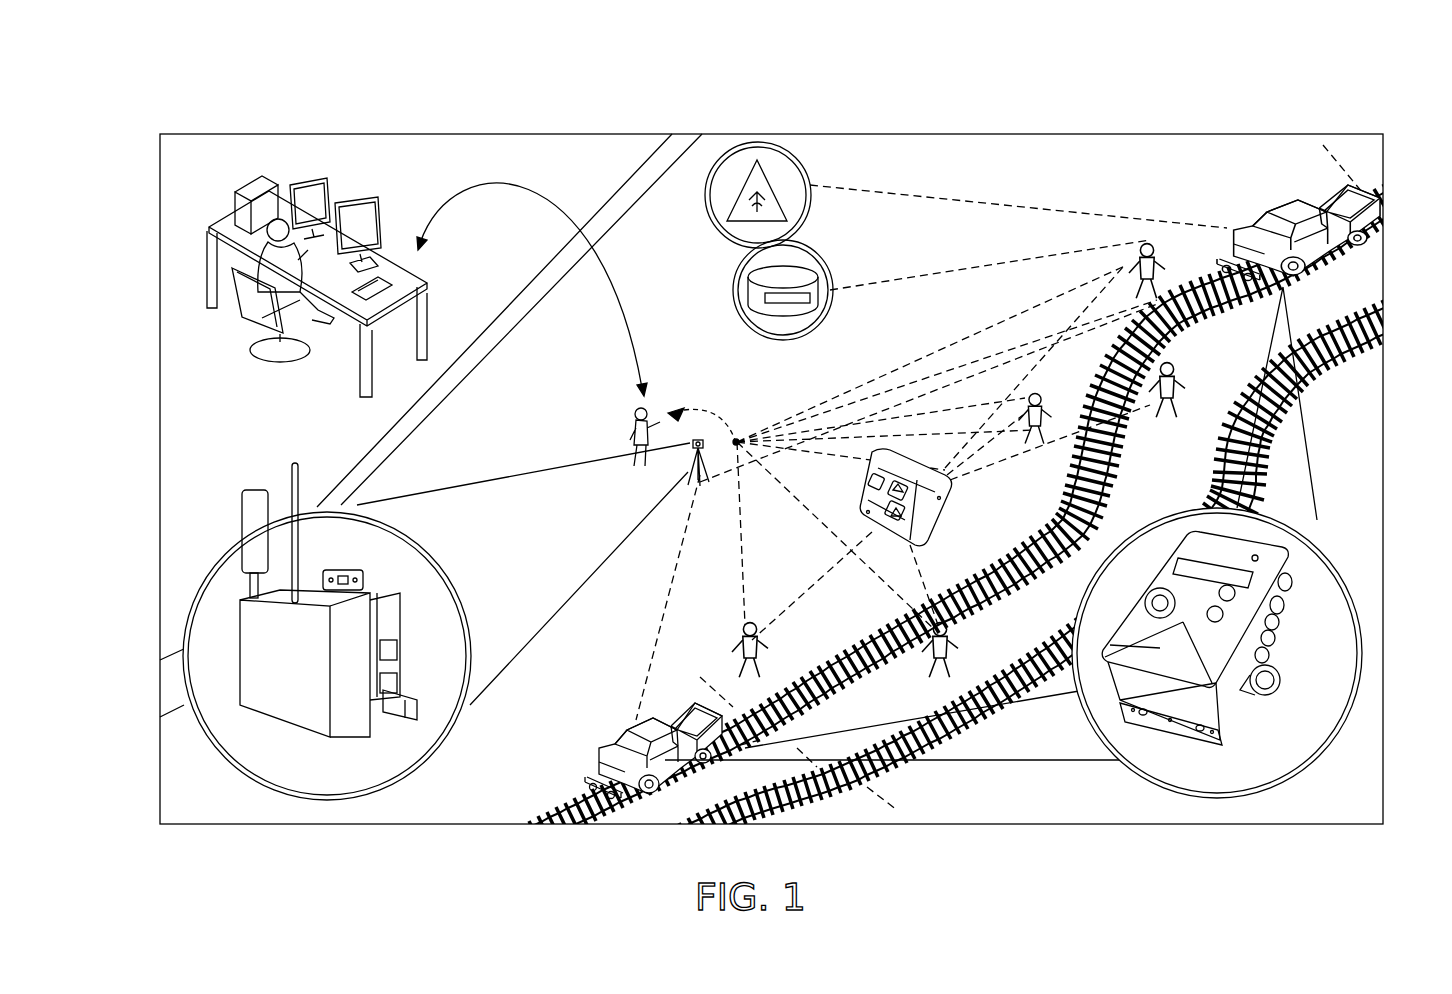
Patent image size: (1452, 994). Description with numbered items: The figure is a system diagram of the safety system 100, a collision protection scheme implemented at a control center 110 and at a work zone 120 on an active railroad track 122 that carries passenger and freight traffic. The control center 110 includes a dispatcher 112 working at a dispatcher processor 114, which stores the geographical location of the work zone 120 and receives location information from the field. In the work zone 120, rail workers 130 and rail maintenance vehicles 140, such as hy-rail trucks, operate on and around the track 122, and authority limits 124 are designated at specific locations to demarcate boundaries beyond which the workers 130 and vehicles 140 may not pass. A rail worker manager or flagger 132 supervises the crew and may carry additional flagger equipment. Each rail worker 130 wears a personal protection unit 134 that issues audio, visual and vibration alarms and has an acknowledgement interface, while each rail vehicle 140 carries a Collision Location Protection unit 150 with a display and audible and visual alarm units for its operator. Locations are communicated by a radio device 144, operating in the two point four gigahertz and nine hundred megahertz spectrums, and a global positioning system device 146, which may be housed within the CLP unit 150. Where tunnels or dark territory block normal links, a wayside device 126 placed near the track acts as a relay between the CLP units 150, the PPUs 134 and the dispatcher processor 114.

The safety system 100 is at (124, 104).
The control center 110 is at (350, 152).
The dispatcher 112 is at (228, 233).
The dispatcher processor 114 is at (257, 175).
The work zone 120 is at (975, 152).
The railroad track 122 is at (975, 735).
The authority limits 124 is at (797, 750).
The wayside device 126 is at (190, 703).
The rail workers 130 is at (744, 648).
The rail worker manager/flagger 132 is at (636, 458).
The personal protection unit 134 is at (950, 503).
The rail maintenance vehicles 140 is at (1300, 195).
The radio device 144 is at (768, 152).
The global positioning system device 146 is at (735, 290).
The Collision Location Protection unit 150 is at (1217, 747).